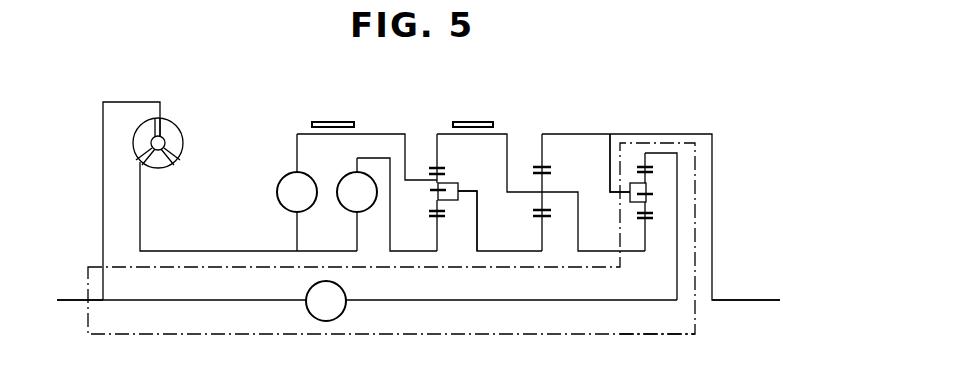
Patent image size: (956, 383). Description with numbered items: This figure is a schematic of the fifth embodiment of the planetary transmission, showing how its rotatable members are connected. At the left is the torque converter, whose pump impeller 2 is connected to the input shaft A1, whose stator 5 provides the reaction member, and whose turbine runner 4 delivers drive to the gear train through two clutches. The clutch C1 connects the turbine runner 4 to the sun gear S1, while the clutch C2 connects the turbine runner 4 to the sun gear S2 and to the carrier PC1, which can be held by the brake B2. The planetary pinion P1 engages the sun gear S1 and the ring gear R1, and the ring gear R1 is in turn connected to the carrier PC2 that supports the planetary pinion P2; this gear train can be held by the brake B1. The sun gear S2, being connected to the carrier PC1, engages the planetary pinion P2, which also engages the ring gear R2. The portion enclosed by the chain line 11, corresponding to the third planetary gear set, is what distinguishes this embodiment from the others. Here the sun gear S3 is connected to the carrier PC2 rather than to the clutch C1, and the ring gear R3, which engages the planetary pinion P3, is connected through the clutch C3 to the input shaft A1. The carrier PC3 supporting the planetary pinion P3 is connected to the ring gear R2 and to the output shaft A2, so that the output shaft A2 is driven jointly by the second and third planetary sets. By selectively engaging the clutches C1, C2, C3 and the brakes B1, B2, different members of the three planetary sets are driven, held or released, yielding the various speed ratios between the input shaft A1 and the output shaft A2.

The pump impeller 2 is at (190, 170).
The turbine runner 4 is at (135, 148).
The stator 5 is at (160, 170).
The chain line 11 is at (670, 336).
The input shaft A1 is at (82, 301).
The output shaft A2 is at (747, 302).
The brake B1 is at (473, 111).
The brake B2 is at (333, 111).
The clutch C1 is at (357, 204).
The clutch C2 is at (297, 192).
The clutch C3 is at (326, 301).
The ring gear R1 is at (434, 152).
The ring gear R2 is at (538, 152).
The ring gear R3 is at (643, 153).
The planetary pinion P1 is at (440, 180).
The planetary pinion P2 is at (543, 183).
The planetary pinion P3 is at (648, 178).
The carrier PC1 is at (462, 200).
The carrier PC2 is at (531, 194).
The carrier PC3 is at (628, 200).
The sun gear S1 is at (437, 230).
The sun gear S2 is at (542, 240).
The sun gear S3 is at (645, 236).